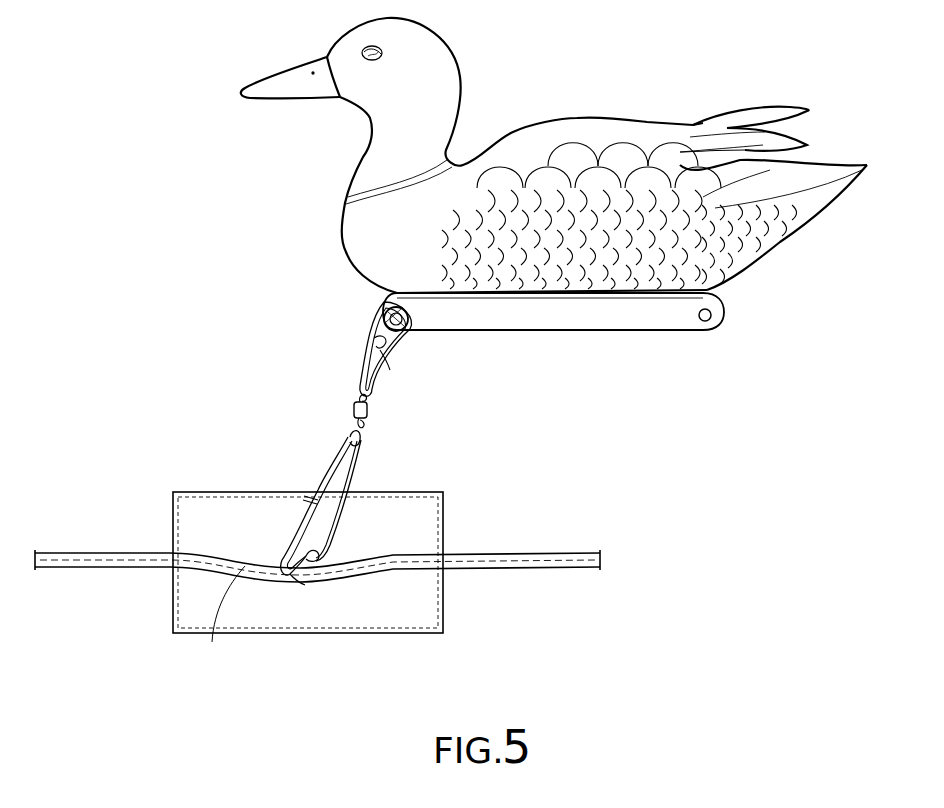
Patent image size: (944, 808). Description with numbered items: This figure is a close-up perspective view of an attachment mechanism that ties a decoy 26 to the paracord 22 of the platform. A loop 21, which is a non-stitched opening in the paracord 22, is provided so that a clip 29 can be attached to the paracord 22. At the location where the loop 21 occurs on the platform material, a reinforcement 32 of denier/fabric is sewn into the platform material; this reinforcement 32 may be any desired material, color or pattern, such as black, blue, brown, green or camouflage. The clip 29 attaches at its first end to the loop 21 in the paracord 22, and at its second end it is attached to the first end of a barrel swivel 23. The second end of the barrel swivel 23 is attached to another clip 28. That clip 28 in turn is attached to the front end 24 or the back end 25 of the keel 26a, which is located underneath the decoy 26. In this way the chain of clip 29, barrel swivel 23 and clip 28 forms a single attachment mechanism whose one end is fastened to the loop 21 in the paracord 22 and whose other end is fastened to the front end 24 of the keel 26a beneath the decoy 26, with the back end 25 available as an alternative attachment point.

The loop 21 is at (225, 618).
The paracord 22 is at (129, 556).
The barrel swivel 23 is at (353, 403).
The front end 24 is at (384, 312).
The back end 25 is at (712, 315).
The decoy 26 is at (607, 117).
The keel 26a is at (515, 340).
The clip 28 is at (375, 353).
The clip 29 is at (289, 578).
The reinforcement 32 is at (406, 592).